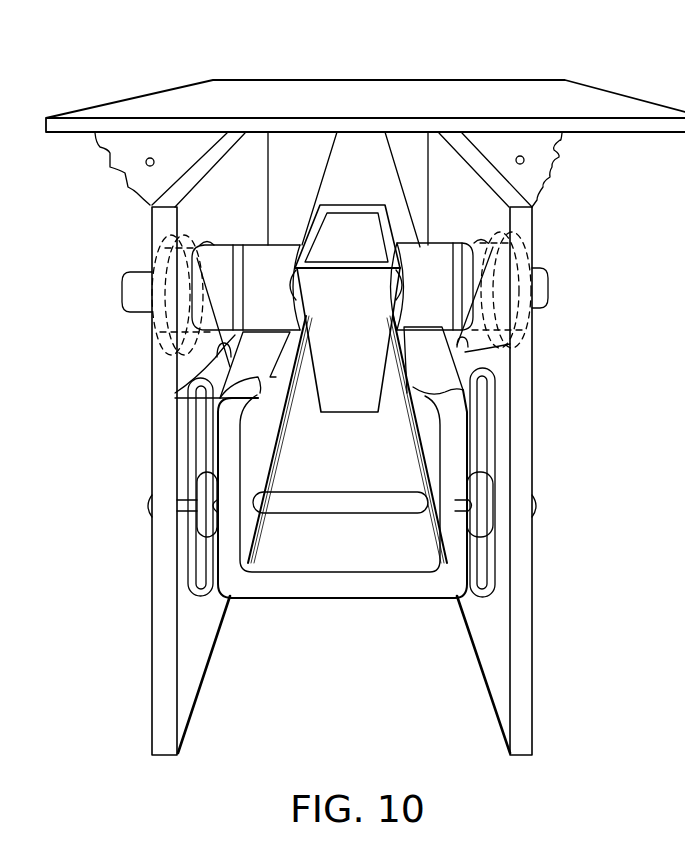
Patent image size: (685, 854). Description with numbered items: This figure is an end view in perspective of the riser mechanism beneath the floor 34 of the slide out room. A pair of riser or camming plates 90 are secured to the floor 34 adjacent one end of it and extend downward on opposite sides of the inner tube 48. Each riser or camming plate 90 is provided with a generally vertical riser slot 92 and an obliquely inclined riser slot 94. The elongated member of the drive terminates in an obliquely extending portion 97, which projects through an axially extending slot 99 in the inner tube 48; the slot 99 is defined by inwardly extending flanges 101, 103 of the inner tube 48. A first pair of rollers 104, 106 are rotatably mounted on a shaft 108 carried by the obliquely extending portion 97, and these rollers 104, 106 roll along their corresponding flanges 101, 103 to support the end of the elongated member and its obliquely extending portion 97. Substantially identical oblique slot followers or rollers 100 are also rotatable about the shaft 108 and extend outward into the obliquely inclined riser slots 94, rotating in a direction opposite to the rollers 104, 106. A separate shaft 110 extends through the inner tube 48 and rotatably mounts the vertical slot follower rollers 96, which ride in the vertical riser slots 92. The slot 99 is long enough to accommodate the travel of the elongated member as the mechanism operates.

The floor 34 is at (372, 95).
The inner tube 48 is at (341, 588).
The riser or camming plate 90 is at (162, 421).
The vertical riser slot 92 is at (195, 452).
The obliquely inclined riser slot 94 is at (230, 362).
The vertical slot follower roller 96 is at (193, 523).
The obliquely extending portion 97 is at (364, 344).
The axially extending slot 99 is at (385, 393).
The oblique slot follower roller 100 is at (215, 262).
The inwardly extending flange 101 is at (258, 393).
The inwardly extending flange 103 is at (480, 382).
The roller 104 is at (267, 260).
The roller 106 is at (435, 258).
The shaft 108 is at (543, 285).
The shaft 110 is at (341, 507).